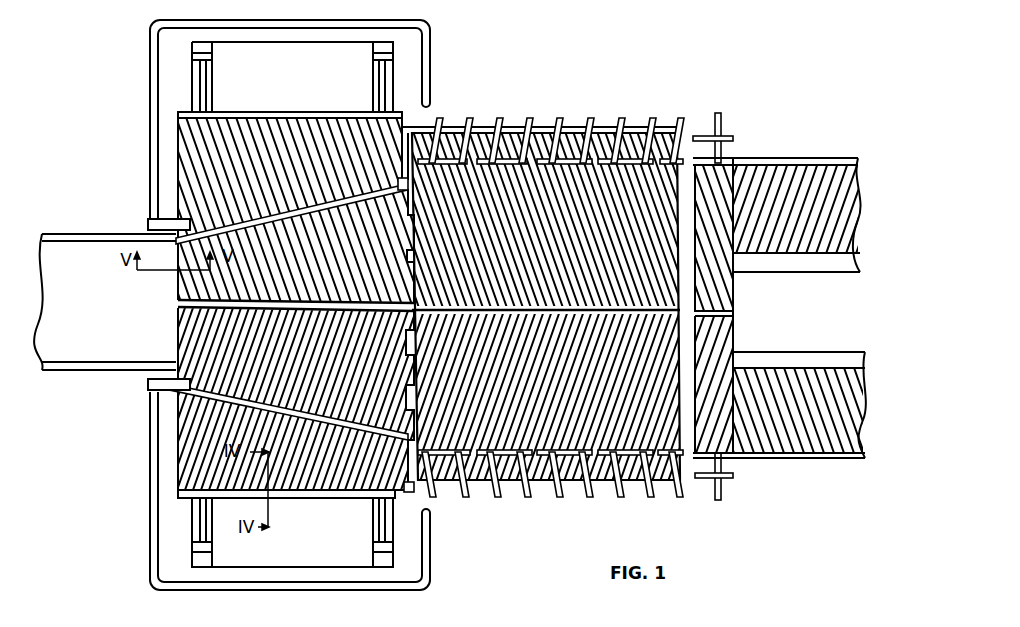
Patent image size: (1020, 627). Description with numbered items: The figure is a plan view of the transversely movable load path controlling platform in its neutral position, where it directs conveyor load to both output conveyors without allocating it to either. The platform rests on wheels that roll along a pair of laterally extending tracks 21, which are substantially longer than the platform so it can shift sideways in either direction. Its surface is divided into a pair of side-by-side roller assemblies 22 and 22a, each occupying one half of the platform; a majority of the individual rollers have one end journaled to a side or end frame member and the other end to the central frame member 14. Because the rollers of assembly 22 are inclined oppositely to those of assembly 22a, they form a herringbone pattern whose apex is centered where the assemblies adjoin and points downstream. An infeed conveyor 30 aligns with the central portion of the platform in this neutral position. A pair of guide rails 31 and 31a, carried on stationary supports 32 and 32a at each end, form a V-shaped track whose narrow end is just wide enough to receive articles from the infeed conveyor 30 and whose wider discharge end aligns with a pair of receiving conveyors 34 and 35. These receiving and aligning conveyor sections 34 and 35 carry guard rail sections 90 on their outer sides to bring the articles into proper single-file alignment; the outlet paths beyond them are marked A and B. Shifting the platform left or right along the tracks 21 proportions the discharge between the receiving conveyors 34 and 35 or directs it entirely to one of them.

The central frame member 14 is at (176, 302).
The tracks 21 is at (380, 84).
The roller assembly 22 is at (180, 144).
The roller assembly 22a is at (187, 462).
The infeed conveyor 30 is at (88, 348).
The guide rail 31 is at (176, 252).
The guide rail 31a is at (197, 366).
The stationary support 32 is at (152, 222).
The stationary support 32a is at (400, 180).
The receiving conveyor 34 is at (735, 292).
The receiving conveyor 35 is at (735, 332).
The guard rail sections 90 is at (480, 120).
The upper outlet conduit A is at (760, 160).
The lower outlet conduit B is at (800, 455).